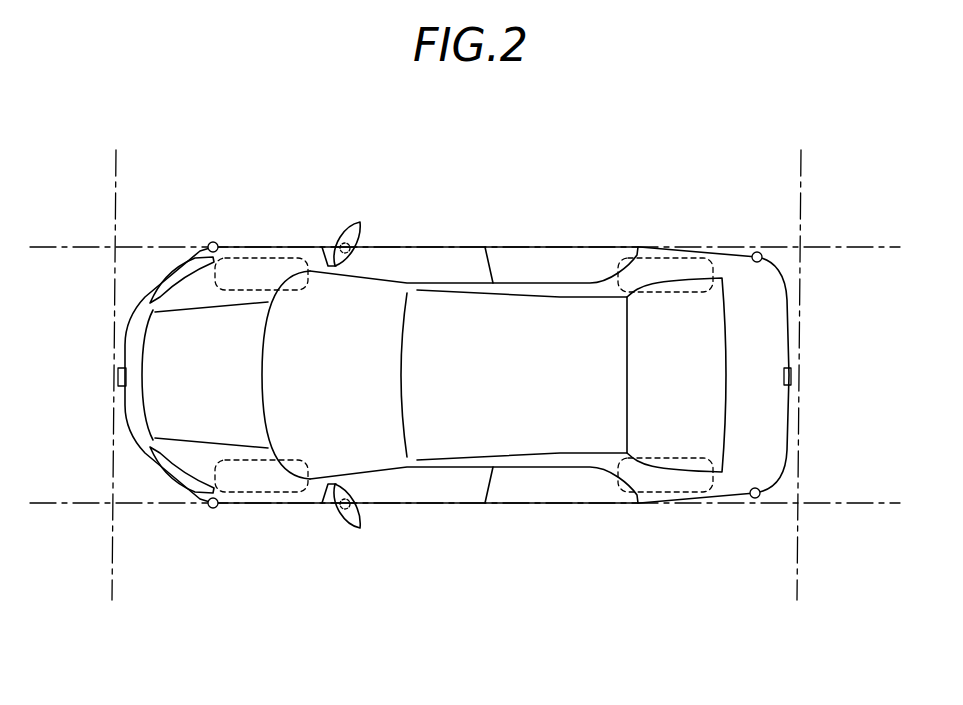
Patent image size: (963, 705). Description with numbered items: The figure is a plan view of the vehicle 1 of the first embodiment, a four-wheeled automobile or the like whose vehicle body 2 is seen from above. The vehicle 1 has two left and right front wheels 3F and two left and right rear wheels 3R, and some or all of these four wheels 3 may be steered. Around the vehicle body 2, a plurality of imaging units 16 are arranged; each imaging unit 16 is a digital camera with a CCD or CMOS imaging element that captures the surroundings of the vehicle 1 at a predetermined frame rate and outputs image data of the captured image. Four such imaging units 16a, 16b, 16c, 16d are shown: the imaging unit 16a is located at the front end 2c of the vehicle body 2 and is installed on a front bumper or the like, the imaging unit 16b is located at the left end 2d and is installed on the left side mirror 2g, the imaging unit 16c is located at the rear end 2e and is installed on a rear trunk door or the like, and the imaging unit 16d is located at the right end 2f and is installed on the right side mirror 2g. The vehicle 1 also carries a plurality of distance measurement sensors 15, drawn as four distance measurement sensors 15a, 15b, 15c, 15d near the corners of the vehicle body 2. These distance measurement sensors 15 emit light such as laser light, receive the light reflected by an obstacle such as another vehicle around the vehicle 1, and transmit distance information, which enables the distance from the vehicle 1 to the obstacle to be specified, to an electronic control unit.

The vehicle 1 is at (574, 164).
The vehicle body 2 is at (738, 244).
The front end 2c is at (126, 414).
The left end 2d is at (560, 503).
The rear end 2e is at (790, 397).
The right end 2f is at (568, 247).
The side mirror 2g is at (361, 225).
The wheel 3 is at (464, 379).
The front wheel 3F is at (260, 258).
The rear wheel 3R is at (663, 258).
The distance measurement sensor 15 is at (468, 365).
The distance measurement sensor 15a is at (755, 498).
The distance measurement sensor 15b is at (211, 508).
The distance measurement sensor 15c is at (210, 243).
The distance measurement sensor 15d is at (759, 253).
The imaging unit 16 is at (467, 393).
The imaging unit 16a is at (118, 377).
The imaging unit 16b is at (343, 510).
The imaging unit 16c is at (792, 375).
The imaging unit 16d is at (345, 243).